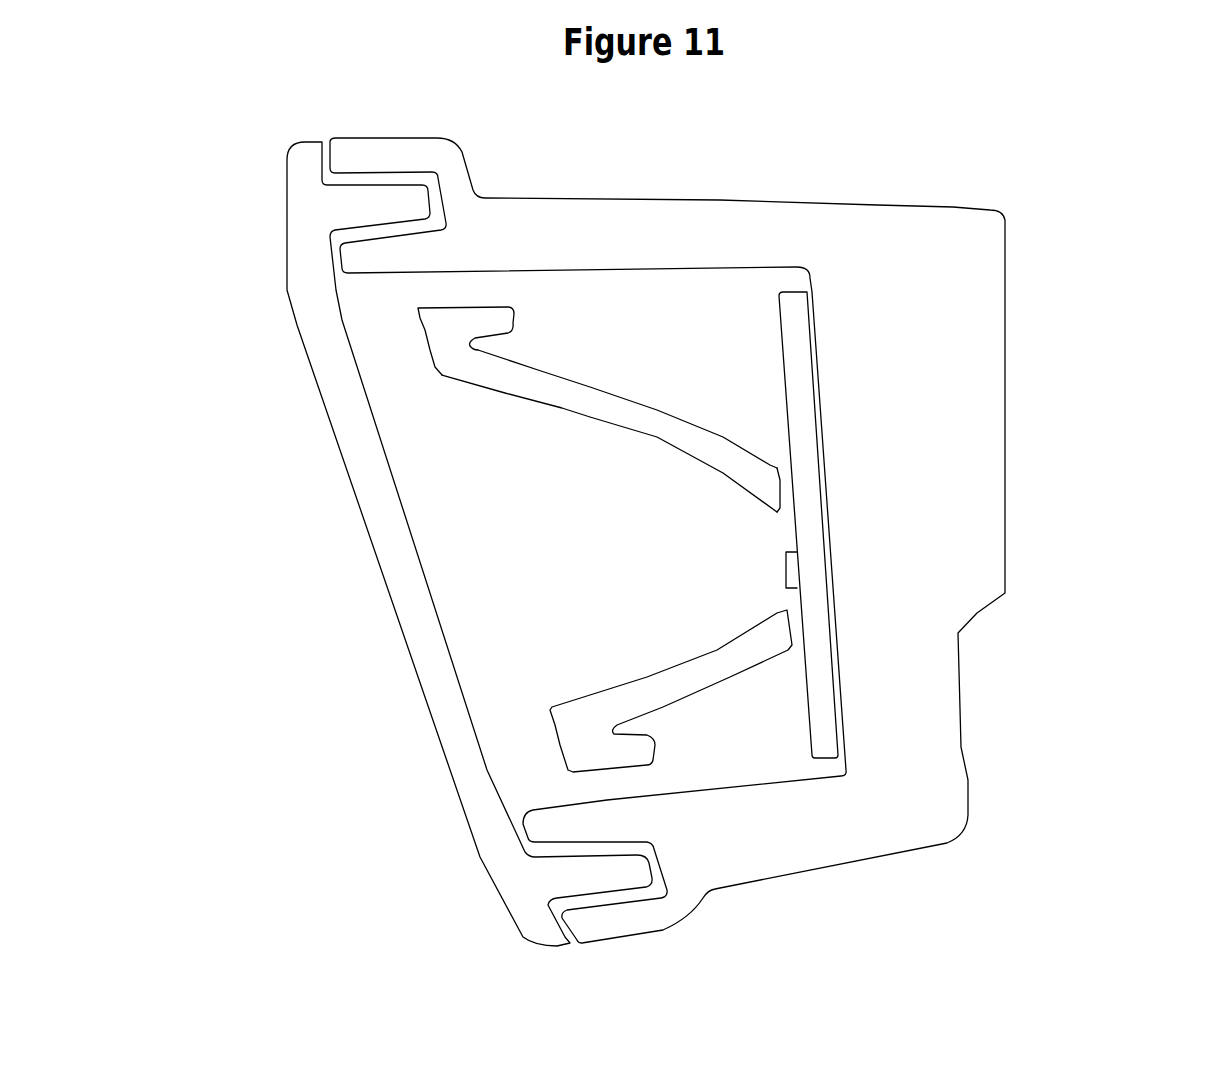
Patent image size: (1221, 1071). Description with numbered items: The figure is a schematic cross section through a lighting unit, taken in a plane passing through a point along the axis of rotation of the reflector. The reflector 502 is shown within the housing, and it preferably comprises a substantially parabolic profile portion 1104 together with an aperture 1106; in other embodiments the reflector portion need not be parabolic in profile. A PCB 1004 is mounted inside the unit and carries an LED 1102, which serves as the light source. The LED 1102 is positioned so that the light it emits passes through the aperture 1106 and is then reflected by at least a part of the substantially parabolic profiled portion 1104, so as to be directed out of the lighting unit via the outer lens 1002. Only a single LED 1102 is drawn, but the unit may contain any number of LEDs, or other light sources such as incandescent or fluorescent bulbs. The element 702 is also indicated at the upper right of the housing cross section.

The outer lens 1002 is at (285, 236).
The cover 702 is at (1010, 219).
The reflector 502 is at (507, 306).
The substantially parabolic profile portion 1104 is at (607, 392).
The aperture 1106 is at (778, 527).
The PCB 1004 is at (792, 290).
The LED 1102 is at (793, 562).